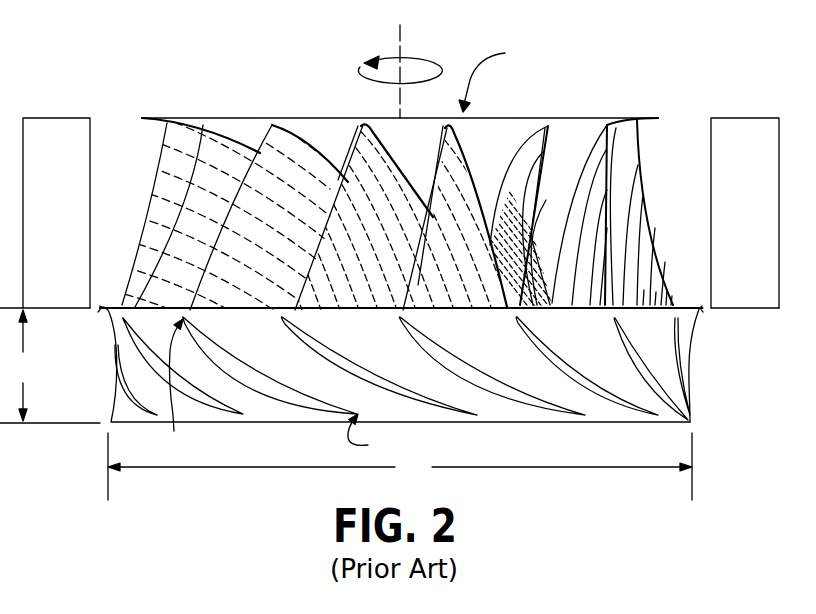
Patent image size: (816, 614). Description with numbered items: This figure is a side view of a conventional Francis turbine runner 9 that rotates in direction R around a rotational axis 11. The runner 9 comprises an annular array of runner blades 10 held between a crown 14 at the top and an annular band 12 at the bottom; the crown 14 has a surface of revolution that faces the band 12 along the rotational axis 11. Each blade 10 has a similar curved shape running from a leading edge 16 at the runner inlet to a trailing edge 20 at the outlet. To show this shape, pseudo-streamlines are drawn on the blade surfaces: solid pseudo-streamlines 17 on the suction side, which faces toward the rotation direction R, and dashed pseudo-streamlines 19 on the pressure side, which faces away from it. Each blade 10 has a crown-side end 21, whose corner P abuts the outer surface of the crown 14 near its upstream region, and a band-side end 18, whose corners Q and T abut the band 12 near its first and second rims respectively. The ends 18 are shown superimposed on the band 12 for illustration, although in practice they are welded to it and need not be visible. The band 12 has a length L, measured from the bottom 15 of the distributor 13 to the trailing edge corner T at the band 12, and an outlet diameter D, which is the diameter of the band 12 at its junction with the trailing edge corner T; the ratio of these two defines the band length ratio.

The Francis turbine runner 9 is at (105, 75).
The runner blade 10 is at (273, 183).
The rotational axis 11 is at (403, 39).
The annular band 12 is at (688, 397).
The distributor 13 is at (67, 223).
The crown 14 is at (573, 124).
The bottom of the distributor 15 is at (98, 312).
The leading edge 16 is at (320, 247).
The solid pseudo-streamline 17 is at (632, 170).
The blade end 18 is at (531, 404).
The dashed pseudo-streamline 19 is at (193, 224).
The trailing edge 20 is at (246, 416).
The blade end 21 is at (240, 127).
The rotation direction R is at (400, 59).
The blade corner P is at (490, 77).
The blade corner Q is at (262, 385).
The blade corner T is at (379, 386).
The band length L is at (50, 366).
The outlet diameter D is at (400, 466).